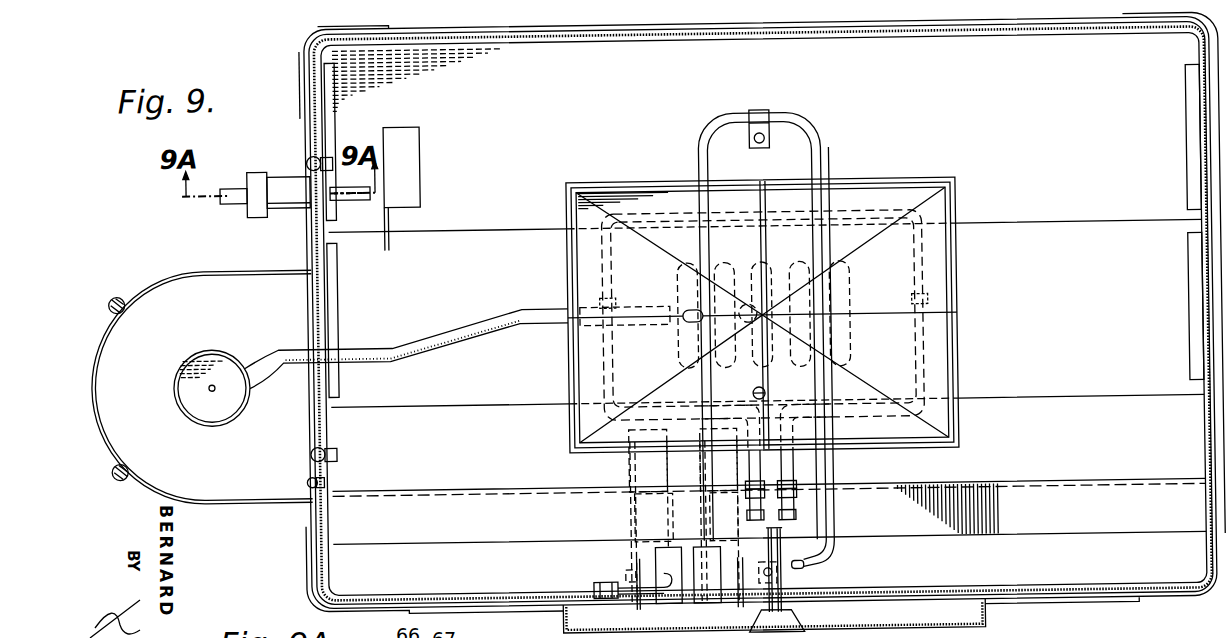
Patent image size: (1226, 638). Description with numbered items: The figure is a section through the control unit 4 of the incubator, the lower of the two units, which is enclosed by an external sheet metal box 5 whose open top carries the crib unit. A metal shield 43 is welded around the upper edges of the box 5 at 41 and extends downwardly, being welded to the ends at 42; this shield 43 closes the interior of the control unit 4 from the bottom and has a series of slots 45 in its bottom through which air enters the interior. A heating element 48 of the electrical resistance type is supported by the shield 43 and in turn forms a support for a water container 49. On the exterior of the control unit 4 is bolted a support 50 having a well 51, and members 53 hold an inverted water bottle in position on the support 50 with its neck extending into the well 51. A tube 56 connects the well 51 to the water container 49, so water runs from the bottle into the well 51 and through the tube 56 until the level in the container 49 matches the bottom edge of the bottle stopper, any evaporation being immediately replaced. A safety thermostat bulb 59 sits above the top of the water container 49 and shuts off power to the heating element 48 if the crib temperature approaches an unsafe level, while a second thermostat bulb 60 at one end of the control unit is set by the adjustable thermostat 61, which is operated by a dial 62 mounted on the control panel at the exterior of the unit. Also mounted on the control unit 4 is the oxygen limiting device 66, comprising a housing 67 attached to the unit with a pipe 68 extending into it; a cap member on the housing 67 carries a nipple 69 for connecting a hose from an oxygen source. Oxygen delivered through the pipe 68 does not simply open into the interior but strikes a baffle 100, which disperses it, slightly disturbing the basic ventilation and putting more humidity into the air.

The control unit 4 is at (1062, 598).
The external sheet metal box 5 is at (1211, 434).
The upper edges of the sheet metal box 41 is at (605, 42).
The ends of the sheet metal box 42 is at (339, 302).
The metal shield 43 is at (765, 222).
The slots 45 is at (686, 369).
The heating element 48 is at (964, 263).
The water container 49 is at (959, 348).
The support 50 is at (229, 500).
The well 51 is at (226, 416).
The members 53 is at (115, 288).
The tube 56 is at (481, 323).
The safety thermostat bulb 59 is at (829, 168).
The second thermostat bulb 60 is at (330, 521).
The adjustable thermostat 61 is at (690, 598).
The dial 62 is at (780, 604).
The oxygen limiting device 66 is at (254, 213).
The housing 67 is at (280, 201).
The pipe 68 is at (342, 196).
The nipple 69 is at (233, 180).
The baffle 100 is at (391, 219).